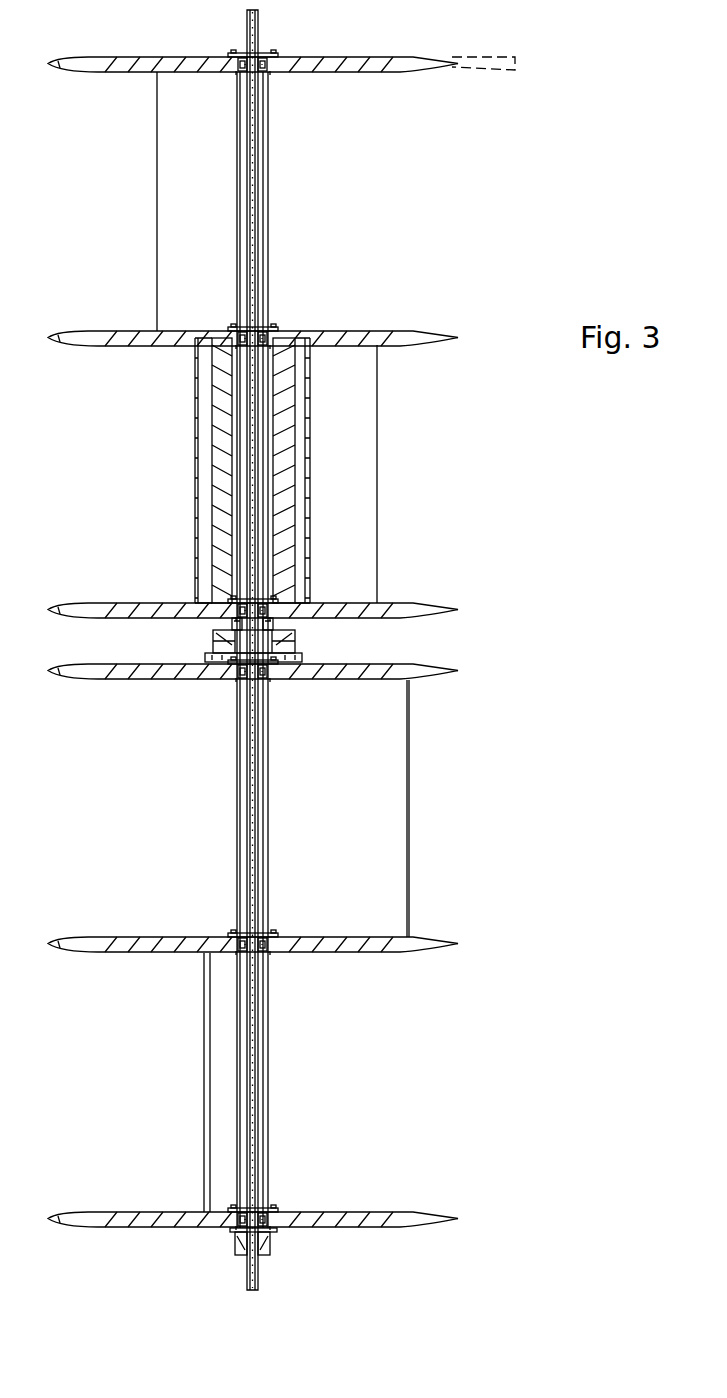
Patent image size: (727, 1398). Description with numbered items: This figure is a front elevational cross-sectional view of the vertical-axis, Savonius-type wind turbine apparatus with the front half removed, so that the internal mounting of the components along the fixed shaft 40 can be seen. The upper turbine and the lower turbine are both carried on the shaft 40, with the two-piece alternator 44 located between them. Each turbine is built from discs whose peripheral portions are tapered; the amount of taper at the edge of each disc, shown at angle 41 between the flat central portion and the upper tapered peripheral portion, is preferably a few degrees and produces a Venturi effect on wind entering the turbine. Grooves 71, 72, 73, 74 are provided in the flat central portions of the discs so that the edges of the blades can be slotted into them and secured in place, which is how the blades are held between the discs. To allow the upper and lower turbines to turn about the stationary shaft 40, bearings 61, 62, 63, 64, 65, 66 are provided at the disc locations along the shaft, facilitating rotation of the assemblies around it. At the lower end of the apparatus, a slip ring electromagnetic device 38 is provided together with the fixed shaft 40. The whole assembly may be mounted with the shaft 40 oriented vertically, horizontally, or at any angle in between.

The shaft 40 is at (261, 12).
The angle 41 is at (527, 67).
The bearing 61 is at (268, 75).
The bearing 62 is at (265, 330).
The bearing 63 is at (270, 601).
The bearing 64 is at (268, 682).
The bearing 65 is at (268, 940).
The bearing 66 is at (268, 1213).
The groove 71 is at (310, 343).
The groove 72 is at (312, 601).
The groove 73 is at (197, 601).
The groove 74 is at (195, 343).
The alternator 44 is at (300, 642).
The slip ring electromagnetic device 38 is at (232, 1245).